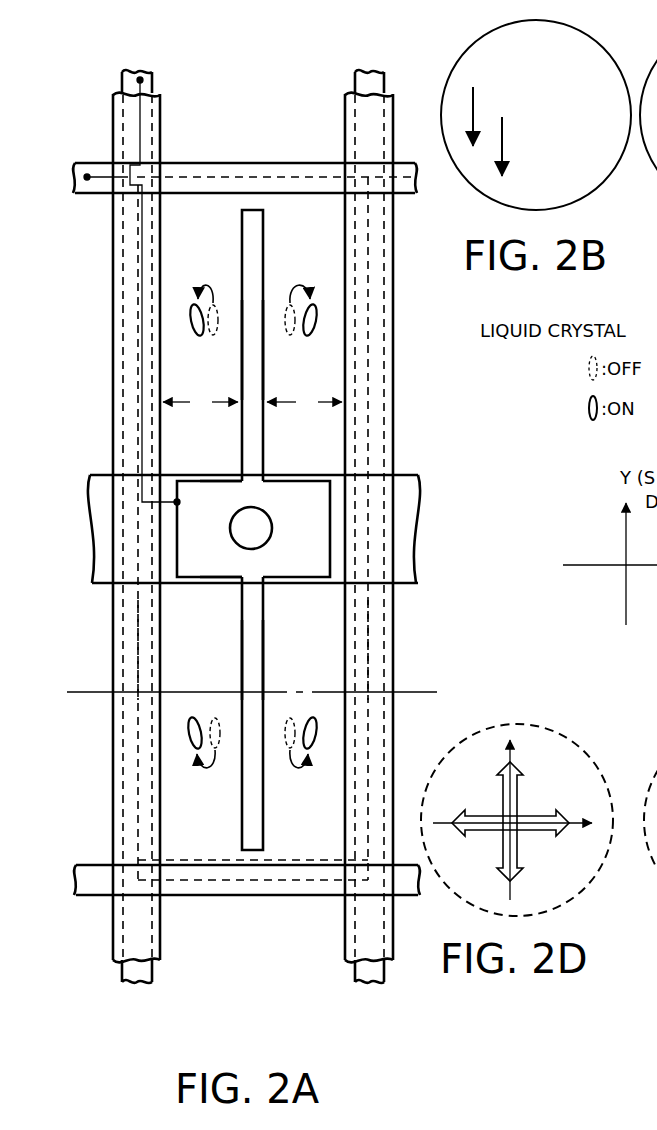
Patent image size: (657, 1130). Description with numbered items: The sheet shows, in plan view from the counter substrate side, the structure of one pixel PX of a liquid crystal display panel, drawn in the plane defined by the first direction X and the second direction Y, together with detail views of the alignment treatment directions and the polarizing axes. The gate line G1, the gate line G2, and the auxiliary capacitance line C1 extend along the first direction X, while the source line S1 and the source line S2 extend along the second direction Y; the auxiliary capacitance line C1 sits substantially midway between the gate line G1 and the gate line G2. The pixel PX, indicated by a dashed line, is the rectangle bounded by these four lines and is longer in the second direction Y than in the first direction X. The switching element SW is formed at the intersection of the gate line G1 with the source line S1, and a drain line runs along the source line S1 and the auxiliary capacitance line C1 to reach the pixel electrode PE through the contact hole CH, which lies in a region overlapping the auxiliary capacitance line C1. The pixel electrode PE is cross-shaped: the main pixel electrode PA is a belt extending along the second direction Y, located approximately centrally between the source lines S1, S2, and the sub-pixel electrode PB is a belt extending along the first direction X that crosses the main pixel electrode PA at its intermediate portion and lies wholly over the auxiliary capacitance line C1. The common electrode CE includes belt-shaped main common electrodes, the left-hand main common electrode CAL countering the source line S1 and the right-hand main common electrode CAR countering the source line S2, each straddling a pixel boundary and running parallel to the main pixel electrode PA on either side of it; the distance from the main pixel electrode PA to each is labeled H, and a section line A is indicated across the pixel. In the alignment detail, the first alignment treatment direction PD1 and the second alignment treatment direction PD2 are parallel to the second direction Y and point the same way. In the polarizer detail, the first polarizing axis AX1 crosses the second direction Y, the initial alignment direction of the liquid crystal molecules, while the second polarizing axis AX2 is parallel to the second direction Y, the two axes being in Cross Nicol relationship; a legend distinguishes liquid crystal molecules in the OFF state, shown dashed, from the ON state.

In FIG. 2A, the source line S1 is at (128, 70).
In FIG. 2A, the source line S2 is at (367, 70).
In FIG. 2A, the gate line G1 is at (72, 181).
In FIG. 2A, the gate line G2 is at (74, 880).
In FIG. 2A, the auxiliary capacitance line C1 is at (92, 541).
In FIG. 2A, the pixel PX is at (265, 174).
In FIG. 2A, the switching element SW is at (134, 192).
In FIG. 2A, the pixel electrode PE is at (310, 530).
In FIG. 2A, the main pixel electrode PA is at (263, 367).
In FIG. 2A, the sub-pixel electrode PB is at (206, 569).
In FIG. 2A, the contact hole CH is at (271, 512).
In FIG. 2A, the horizontal gap H is at (252, 402).
In FIG. 2A, the section line A- A is at (248, 693).
In FIG. 2A, the main common electrode CAL is at (112, 794).
In FIG. 2A, the main common electrode CAR is at (394, 648).
In FIG. 2A, the common electrode CE is at (341, 928).
In FIG. 2B, the first alignment treatment direction PD1 is at (473, 95).
In FIG. 2B, the second alignment treatment direction PD2 is at (502, 128).
In FIG. 2D, the first polarizing axis AX1 is at (536, 832).
In FIG. 2D, the second polarizing axis AX2 is at (517, 783).
In FIG. 2D, the first direction X is at (520, 824).
In FIG. 2D, the second direction Y is at (518, 816).